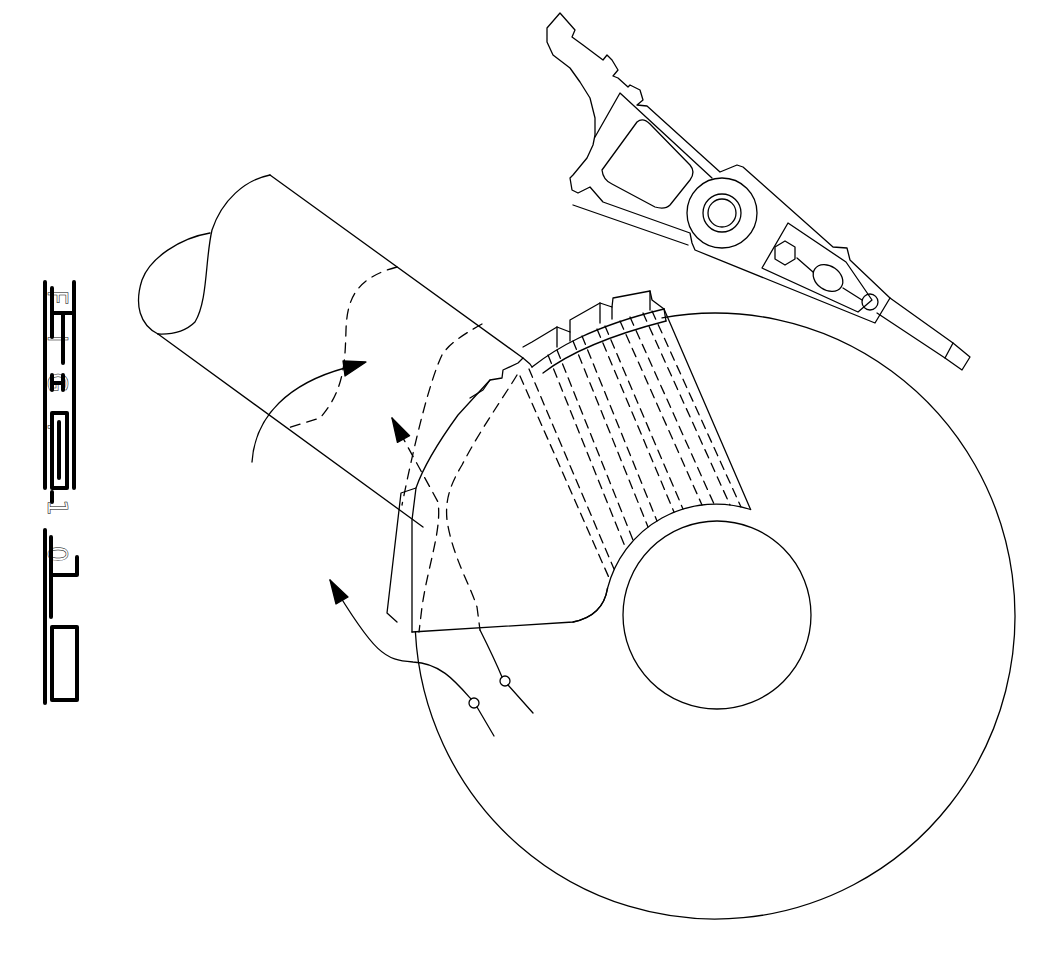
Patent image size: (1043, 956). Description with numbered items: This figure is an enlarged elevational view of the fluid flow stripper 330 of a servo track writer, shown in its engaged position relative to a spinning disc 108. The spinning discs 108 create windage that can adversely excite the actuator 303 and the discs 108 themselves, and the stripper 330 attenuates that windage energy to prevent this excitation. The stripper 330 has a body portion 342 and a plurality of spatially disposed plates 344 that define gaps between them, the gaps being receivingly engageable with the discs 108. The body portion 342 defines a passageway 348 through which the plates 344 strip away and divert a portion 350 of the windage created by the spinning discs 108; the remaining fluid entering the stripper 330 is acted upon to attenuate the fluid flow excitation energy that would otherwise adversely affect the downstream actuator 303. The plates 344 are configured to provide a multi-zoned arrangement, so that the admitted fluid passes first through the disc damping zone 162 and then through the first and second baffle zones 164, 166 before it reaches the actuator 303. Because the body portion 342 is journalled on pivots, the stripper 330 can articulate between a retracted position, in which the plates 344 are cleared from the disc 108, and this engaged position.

The disc 108 is at (927, 757).
The disc damping zone 162 is at (402, 493).
The first baffle zone 164 is at (523, 347).
The second baffle zone 166 is at (608, 302).
The actuator 303 is at (733, 220).
The stripper 330 is at (575, 622).
The body portion 342 is at (297, 193).
The plates 344 is at (757, 527).
The passageway 348 is at (301, 432).
The portion of the windage 350 is at (510, 681).